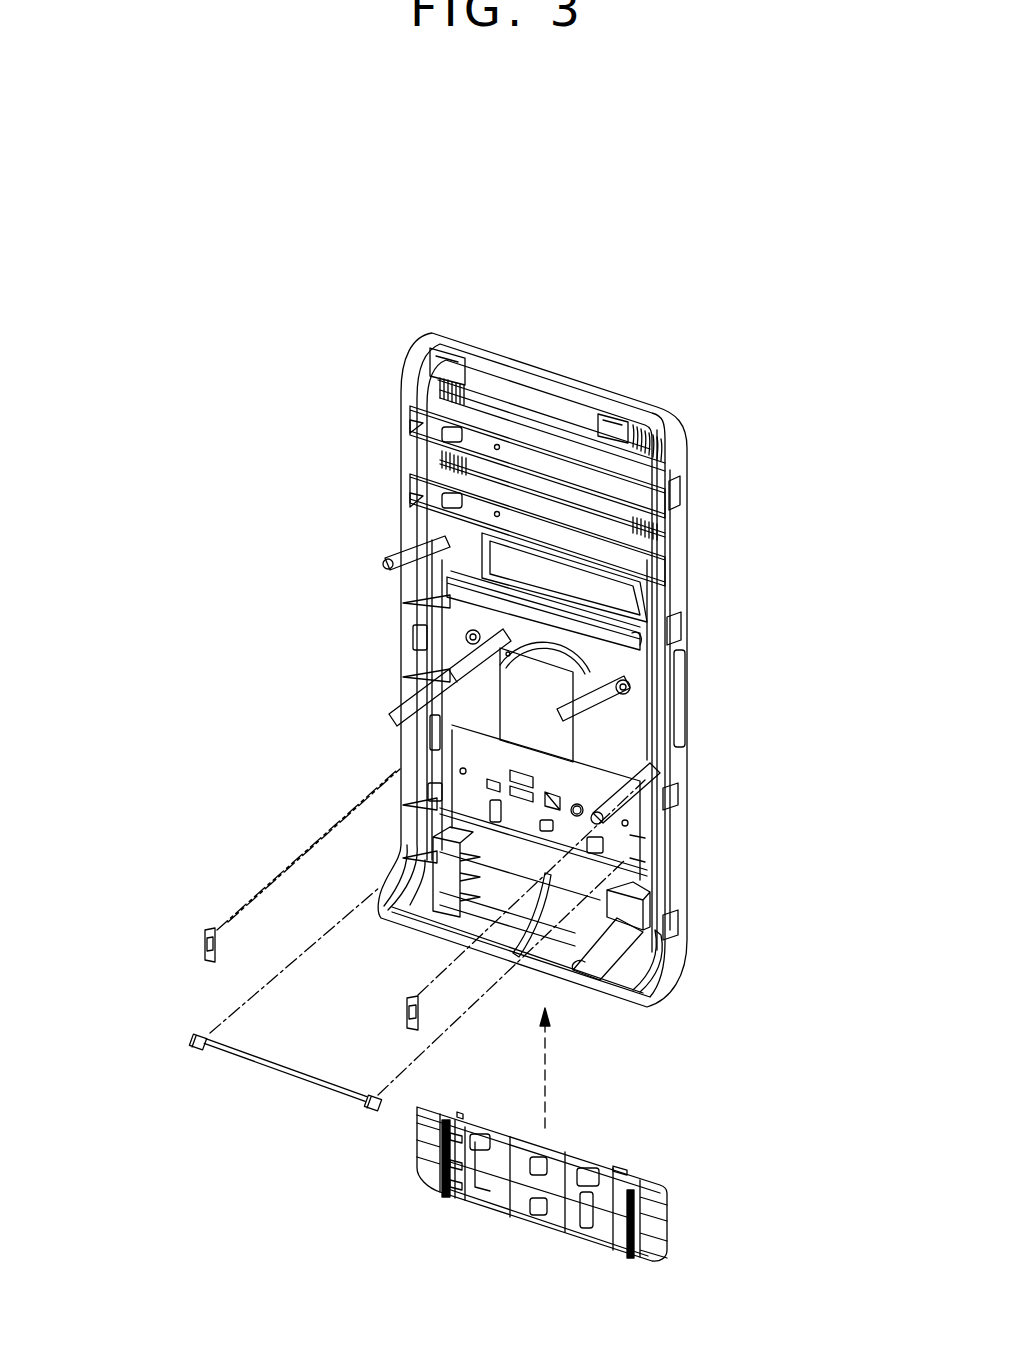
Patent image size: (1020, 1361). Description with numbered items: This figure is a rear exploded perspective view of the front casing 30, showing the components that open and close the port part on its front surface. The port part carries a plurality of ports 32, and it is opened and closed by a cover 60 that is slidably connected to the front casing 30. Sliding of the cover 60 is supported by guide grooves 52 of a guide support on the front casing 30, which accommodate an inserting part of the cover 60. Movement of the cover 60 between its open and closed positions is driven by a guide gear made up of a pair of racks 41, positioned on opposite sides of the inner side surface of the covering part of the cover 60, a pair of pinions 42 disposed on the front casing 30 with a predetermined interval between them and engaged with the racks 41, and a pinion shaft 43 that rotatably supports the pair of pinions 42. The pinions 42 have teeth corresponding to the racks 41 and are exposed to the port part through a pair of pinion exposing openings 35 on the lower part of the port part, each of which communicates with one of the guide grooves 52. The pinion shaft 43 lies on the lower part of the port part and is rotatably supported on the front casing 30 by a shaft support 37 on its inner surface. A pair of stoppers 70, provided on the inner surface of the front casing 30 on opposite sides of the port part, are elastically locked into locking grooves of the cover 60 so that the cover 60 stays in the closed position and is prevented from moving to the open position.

The front casing 30 is at (690, 558).
The ports 32 is at (567, 797).
The shaft support 37 is at (587, 804).
The guide grooves 52 is at (640, 842).
The pinion exposing openings 35 is at (640, 862).
The cover 60 is at (667, 1217).
The racks 41 is at (450, 1200).
The pinions 42 is at (197, 1050).
The pinion shaft 43 is at (283, 1083).
The stoppers 70 is at (205, 944).